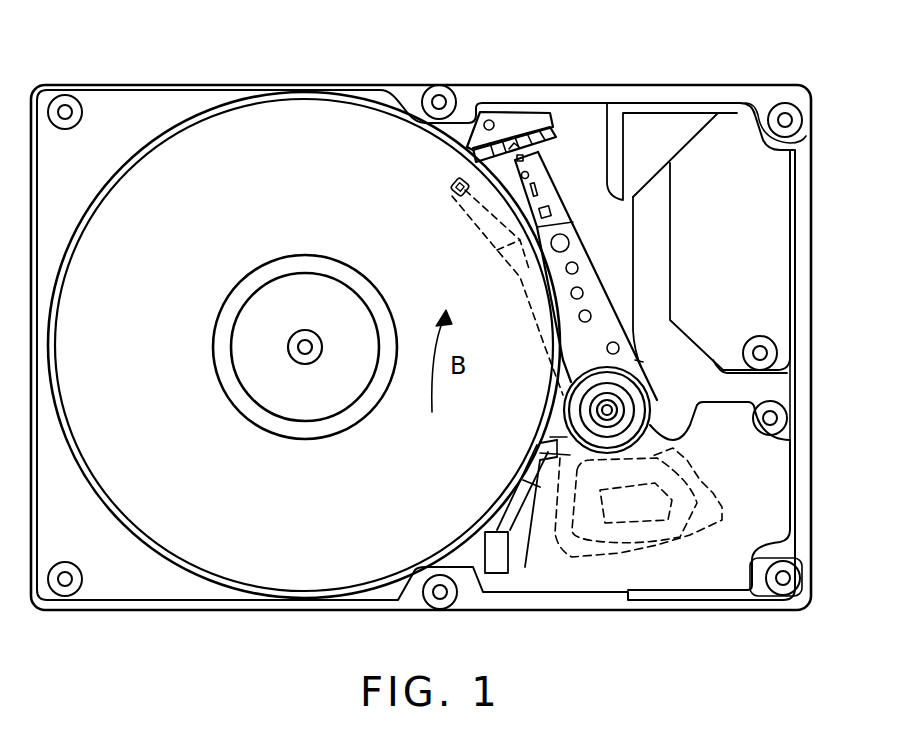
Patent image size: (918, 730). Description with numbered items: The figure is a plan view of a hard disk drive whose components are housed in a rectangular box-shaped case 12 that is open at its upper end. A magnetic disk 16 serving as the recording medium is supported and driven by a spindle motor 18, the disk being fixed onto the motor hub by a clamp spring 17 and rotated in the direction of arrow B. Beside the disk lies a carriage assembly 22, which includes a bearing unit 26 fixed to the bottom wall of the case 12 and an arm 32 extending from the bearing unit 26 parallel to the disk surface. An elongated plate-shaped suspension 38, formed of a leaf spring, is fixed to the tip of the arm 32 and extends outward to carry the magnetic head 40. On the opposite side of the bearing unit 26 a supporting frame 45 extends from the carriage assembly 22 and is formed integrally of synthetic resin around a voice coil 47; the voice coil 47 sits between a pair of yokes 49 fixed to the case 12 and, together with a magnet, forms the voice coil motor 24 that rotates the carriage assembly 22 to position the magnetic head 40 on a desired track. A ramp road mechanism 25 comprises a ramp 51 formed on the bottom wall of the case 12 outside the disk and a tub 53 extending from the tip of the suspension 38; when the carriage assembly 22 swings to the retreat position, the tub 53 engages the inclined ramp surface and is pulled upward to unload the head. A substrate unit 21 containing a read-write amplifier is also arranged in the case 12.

The case 12 is at (138, 100).
The magnetic disk 16 is at (305, 112).
The clamp spring 17 is at (310, 412).
The spindle motor 18 is at (212, 355).
The substrate unit 21 is at (712, 143).
The carriage assembly 22 is at (619, 297).
The voice coil motor 24 is at (548, 496).
The ramp road mechanism 25 is at (505, 110).
The bearing unit 26 is at (568, 413).
The arm 32 is at (607, 323).
The suspension 38 is at (565, 164).
The magnetic head 40 is at (452, 195).
The supporting frame 45 is at (708, 477).
The voice coil 47 is at (618, 545).
The yoke 49 is at (783, 470).
The ramp 51 is at (540, 117).
The tub 53 is at (452, 180).